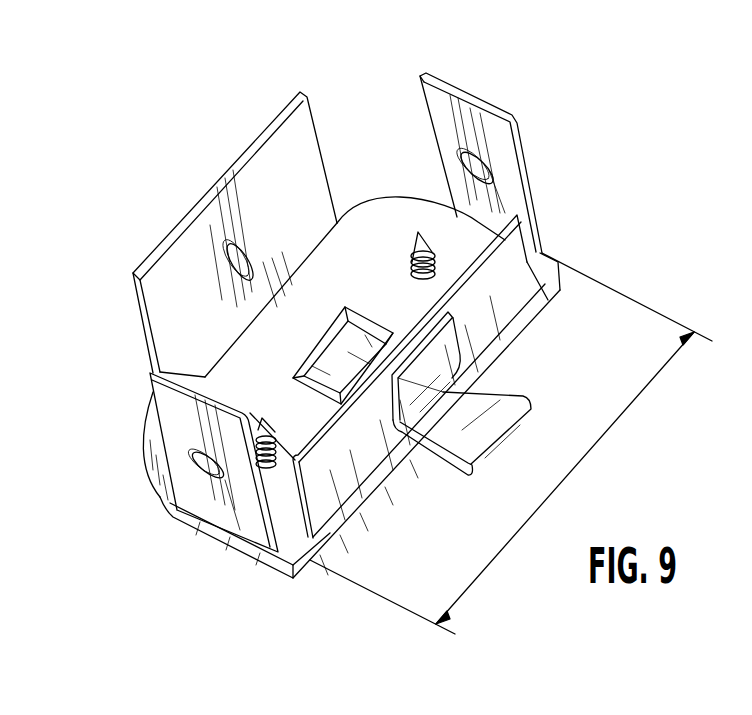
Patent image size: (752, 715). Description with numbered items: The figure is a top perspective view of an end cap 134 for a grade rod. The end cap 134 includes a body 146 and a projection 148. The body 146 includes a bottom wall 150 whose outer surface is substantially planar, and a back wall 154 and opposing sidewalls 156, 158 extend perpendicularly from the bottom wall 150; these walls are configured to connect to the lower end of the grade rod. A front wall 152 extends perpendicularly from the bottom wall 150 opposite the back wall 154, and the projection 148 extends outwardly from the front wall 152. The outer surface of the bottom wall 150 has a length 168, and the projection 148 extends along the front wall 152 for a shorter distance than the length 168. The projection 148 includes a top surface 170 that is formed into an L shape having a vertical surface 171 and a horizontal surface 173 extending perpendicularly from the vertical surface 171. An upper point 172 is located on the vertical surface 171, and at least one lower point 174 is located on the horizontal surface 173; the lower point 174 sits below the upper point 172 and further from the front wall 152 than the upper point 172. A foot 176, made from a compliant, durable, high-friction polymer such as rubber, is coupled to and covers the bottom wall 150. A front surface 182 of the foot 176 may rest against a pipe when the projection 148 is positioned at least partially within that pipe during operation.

The end cap 134 is at (528, 78).
The body 146 is at (375, 165).
The projection 148 is at (441, 473).
The bottom wall 150 is at (236, 366).
The front wall 152 is at (518, 262).
The back wall 154 is at (162, 293).
The sidewall 156 is at (506, 188).
The sidewall 158 is at (180, 424).
The length 168 is at (497, 562).
The top surface 170 is at (492, 456).
The vertical surface 171 is at (443, 370).
The upper point 172 is at (443, 338).
The horizontal surface 173 is at (486, 415).
The lower point 174 is at (527, 417).
The foot 176 is at (186, 529).
The front surface 182 is at (237, 542).